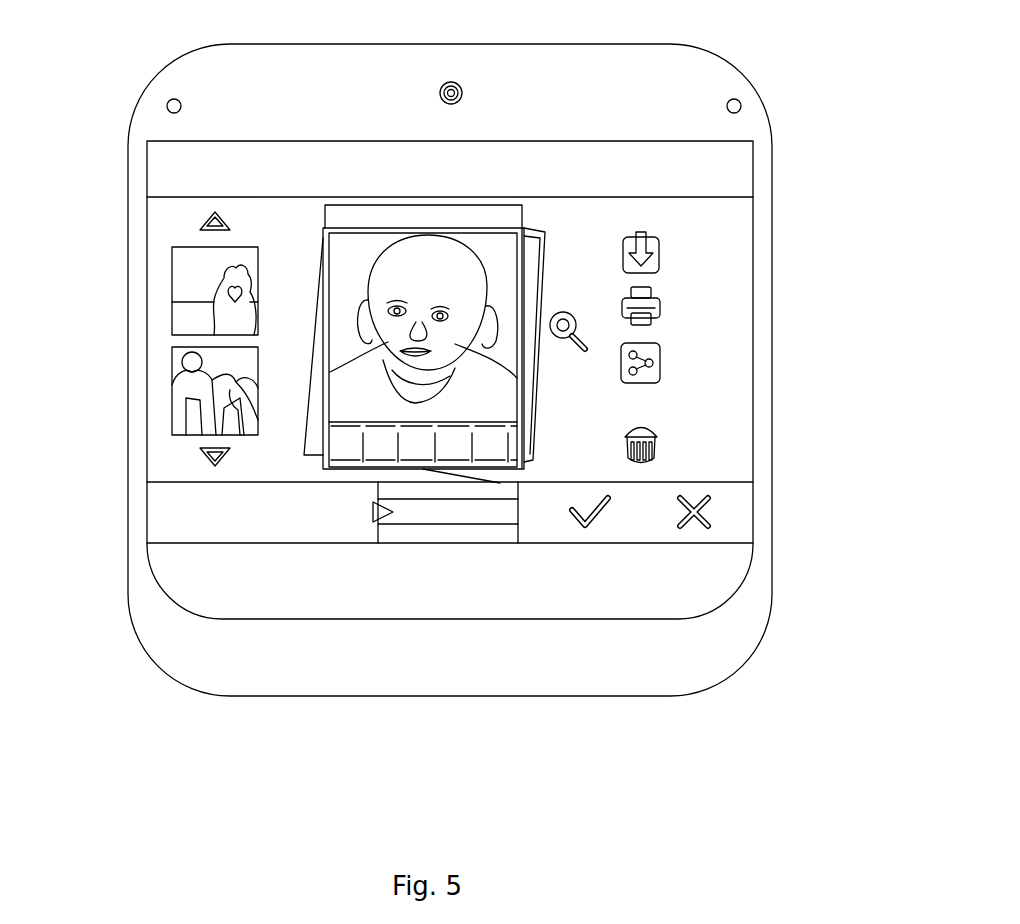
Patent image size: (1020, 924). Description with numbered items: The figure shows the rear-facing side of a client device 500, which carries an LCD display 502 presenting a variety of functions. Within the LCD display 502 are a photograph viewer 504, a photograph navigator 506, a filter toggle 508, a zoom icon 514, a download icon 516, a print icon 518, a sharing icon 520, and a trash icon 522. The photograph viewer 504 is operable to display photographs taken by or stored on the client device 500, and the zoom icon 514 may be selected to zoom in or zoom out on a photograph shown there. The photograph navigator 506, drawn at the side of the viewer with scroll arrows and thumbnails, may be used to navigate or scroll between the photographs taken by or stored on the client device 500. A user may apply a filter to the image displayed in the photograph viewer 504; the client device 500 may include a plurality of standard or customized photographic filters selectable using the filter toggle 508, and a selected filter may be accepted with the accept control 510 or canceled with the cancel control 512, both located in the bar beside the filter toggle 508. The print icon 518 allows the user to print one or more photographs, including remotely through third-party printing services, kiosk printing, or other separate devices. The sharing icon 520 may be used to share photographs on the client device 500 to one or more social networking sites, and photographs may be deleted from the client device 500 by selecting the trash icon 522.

The client device 500 is at (313, 697).
The LCD display 502 is at (210, 582).
The photograph viewer 504 is at (355, 250).
The photograph navigator 506 is at (162, 346).
The filter toggle 508 is at (210, 505).
The accept 510 is at (575, 526).
The cancel 512 is at (710, 510).
The zoom icon 514 is at (565, 313).
The download icon 516 is at (657, 260).
The print icon 518 is at (655, 302).
The sharing icon 520 is at (657, 348).
The trash icon 522 is at (643, 427).